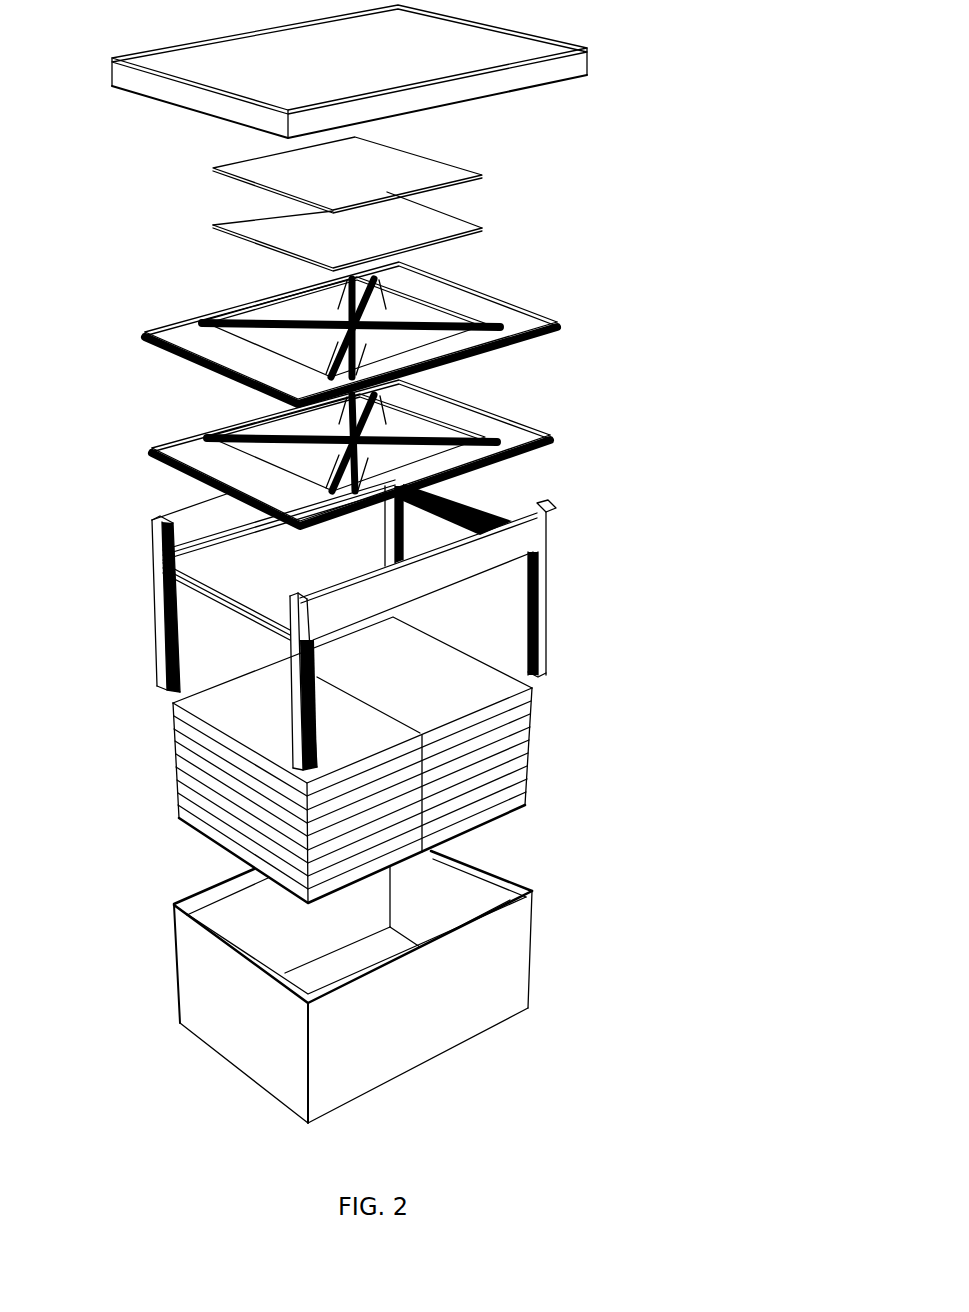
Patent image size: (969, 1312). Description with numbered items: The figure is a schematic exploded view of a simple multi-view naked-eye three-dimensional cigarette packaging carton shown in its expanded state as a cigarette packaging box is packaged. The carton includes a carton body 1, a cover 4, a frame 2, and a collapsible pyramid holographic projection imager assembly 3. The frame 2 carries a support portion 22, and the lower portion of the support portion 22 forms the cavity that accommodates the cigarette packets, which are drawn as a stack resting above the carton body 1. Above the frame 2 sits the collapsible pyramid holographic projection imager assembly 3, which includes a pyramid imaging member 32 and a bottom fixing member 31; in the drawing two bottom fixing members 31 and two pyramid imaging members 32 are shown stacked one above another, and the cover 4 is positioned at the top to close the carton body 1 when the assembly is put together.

The carton body 1 is at (535, 950).
The frame 2 is at (422, 597).
The support portion 22 is at (477, 503).
The pyramid imager assembly 3 is at (355, 317).
The bottom fixing member 31 is at (453, 163).
The pyramid imaging member 32 is at (480, 278).
The cover 4 is at (587, 62).